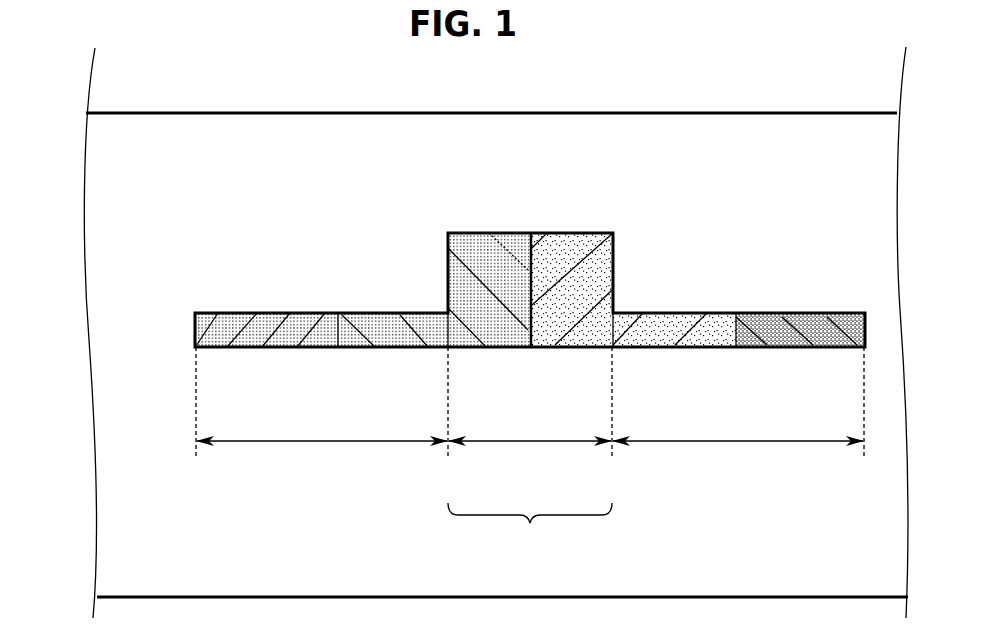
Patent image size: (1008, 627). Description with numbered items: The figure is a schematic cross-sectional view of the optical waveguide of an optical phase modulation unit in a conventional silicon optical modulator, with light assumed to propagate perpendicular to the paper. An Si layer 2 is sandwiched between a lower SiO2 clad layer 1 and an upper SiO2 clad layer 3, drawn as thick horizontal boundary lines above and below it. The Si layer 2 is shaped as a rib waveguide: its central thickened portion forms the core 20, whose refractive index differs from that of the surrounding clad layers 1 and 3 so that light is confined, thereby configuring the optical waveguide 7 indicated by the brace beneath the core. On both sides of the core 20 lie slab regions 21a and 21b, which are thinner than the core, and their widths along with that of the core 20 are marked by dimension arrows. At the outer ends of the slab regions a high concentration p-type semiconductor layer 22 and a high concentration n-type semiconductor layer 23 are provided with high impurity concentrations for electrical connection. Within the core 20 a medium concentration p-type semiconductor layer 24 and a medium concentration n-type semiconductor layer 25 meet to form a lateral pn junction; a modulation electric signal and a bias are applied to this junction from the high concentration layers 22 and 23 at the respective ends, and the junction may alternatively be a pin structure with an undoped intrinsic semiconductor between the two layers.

The SiO2 clad layer 1 is at (120, 514).
The Si layer 2 is at (182, 333).
The SiO2 clad layer 3 is at (120, 152).
The optical waveguide 7 is at (530, 533).
The core 20 is at (530, 416).
The slab region 21a is at (321, 416).
The slab region 21b is at (738, 416).
The high concentration p-type semiconductor layer 22 is at (268, 312).
The high concentration n-type semiconductor layer 23 is at (797, 312).
The medium concentration p-type semiconductor layer 24 is at (488, 232).
The medium concentration n-type semiconductor layer 25 is at (568, 232).